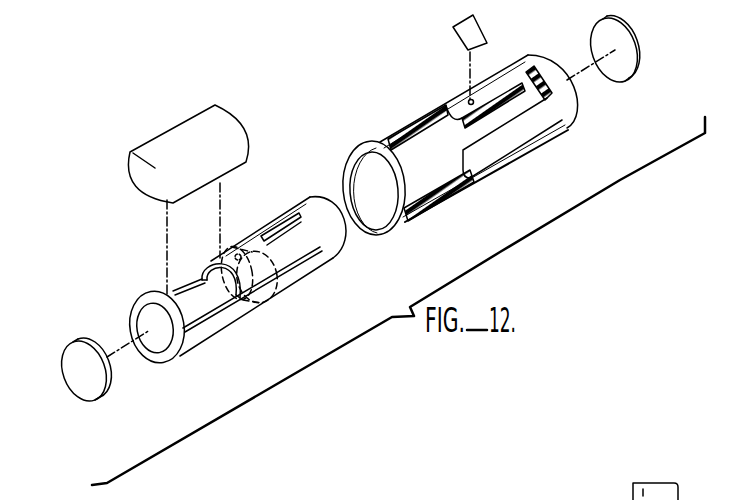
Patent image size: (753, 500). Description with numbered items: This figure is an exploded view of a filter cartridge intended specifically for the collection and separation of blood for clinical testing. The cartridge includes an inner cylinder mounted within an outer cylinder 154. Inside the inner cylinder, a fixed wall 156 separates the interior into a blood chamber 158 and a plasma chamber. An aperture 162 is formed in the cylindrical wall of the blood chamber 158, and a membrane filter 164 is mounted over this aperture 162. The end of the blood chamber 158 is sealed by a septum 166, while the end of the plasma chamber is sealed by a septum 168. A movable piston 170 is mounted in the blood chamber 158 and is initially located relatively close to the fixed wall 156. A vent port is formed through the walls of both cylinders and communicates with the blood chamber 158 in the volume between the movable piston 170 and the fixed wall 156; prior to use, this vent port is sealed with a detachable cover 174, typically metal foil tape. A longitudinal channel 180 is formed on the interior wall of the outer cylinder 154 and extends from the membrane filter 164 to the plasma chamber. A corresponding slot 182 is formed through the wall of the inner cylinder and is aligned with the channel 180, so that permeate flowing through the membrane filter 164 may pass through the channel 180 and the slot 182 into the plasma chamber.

The outer cylinder 154 is at (407, 226).
The fixed wall 156 is at (287, 297).
The blood chamber 158 is at (198, 306).
The aperture 162 is at (152, 277).
The membrane filter 164 is at (230, 126).
The septum 166 is at (82, 375).
The septum 168 is at (623, 77).
The movable piston 170 is at (229, 294).
The detachable cover 174 is at (475, 33).
The longitudinal channel 180 is at (462, 128).
The slot 182 is at (263, 236).